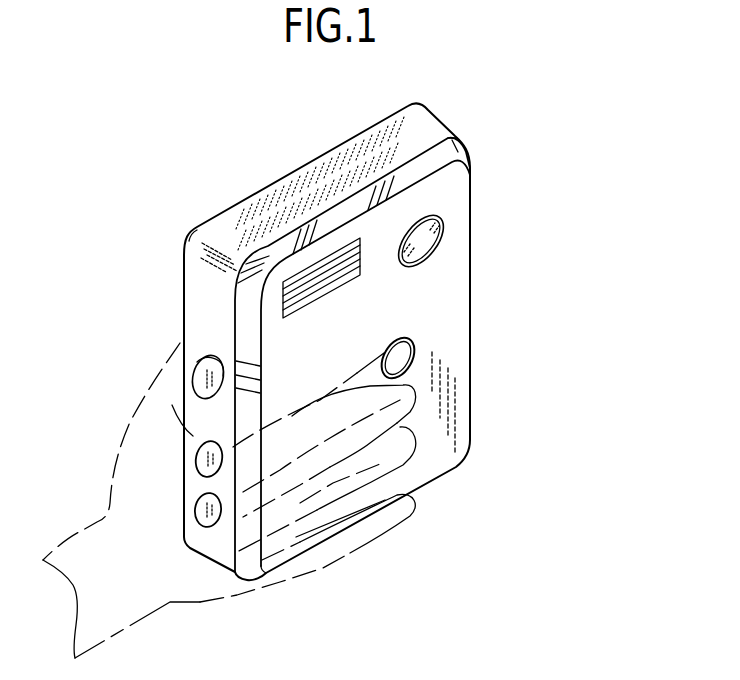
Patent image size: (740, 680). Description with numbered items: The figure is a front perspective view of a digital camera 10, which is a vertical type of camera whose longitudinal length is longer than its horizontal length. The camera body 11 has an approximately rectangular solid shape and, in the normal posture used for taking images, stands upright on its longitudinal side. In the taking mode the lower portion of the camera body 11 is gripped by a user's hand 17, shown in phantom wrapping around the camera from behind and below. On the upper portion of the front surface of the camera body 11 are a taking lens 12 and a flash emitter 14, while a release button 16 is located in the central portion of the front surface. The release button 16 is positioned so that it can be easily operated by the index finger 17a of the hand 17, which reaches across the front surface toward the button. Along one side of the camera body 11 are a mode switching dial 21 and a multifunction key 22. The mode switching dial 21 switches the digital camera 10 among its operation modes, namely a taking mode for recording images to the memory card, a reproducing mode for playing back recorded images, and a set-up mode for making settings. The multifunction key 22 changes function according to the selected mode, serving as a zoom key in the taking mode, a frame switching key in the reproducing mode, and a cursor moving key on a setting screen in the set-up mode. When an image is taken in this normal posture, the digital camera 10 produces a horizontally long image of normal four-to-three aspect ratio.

The digital camera 10 is at (207, 102).
The camera body 11 is at (236, 184).
The taking lens 12 is at (418, 243).
The flash emitter 14 is at (322, 283).
The release button 16 is at (417, 347).
The user's hand 17 is at (200, 603).
The index finger 17a is at (322, 428).
The mode switching dial 21 is at (199, 375).
The multifunction key 22 is at (200, 460).